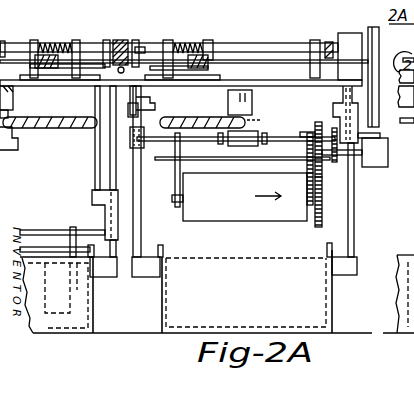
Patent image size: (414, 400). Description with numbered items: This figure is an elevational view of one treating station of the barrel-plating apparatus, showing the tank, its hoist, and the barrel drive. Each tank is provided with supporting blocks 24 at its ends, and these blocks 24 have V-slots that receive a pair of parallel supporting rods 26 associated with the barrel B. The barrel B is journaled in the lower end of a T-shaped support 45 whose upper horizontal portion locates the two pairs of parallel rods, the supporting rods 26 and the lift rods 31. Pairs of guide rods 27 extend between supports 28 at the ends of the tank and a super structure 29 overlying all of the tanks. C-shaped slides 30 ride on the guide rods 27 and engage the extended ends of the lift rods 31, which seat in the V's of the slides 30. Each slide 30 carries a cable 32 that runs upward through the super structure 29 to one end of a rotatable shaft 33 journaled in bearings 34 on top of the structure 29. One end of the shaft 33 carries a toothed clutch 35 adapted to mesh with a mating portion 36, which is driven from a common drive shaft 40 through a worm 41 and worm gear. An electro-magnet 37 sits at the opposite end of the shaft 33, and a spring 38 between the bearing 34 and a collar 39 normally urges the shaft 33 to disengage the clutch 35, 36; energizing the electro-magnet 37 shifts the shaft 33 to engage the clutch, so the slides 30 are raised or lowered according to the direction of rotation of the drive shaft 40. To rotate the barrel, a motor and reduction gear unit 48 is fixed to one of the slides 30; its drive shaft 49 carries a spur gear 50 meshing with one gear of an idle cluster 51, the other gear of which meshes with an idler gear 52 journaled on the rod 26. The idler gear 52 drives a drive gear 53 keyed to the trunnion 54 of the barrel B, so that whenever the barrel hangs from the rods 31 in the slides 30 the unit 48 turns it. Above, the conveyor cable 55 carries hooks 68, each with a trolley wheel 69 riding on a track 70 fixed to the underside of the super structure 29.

The supporting block 24 is at (164, 249).
The supporting rod 26 is at (227, 160).
The guide rod 27 is at (141, 236).
The support 28 is at (143, 273).
The super structure 29 is at (288, 86).
The C-shaped slide 30 is at (333, 107).
The lift rod 31 is at (210, 143).
The cable 32 is at (327, 66).
The rotatable shaft 33 is at (275, 47).
The bearing 34 is at (168, 43).
The toothed clutch 35 is at (100, 42).
The mating clutch portion 36 is at (116, 40).
The electro-magnet 37 is at (350, 36).
The spring 38 is at (200, 53).
The collar 39 is at (222, 43).
The common drive shaft 40 is at (112, 78).
The worm 41 is at (128, 77).
The T-shaped support 45 is at (174, 188).
The motor and reduction gear unit 48 is at (382, 158).
The drive shaft 49 is at (353, 162).
The spur gear 50 is at (335, 163).
The idle cluster 51 is at (327, 137).
The idler gear 52 is at (304, 164).
The drive gear 53 is at (315, 220).
The trunnion 54 is at (304, 198).
The cable 55 is at (53, 126).
The hook 68 is at (253, 116).
The trolley wheel 69 is at (236, 100).
The track 70 is at (18, 112).